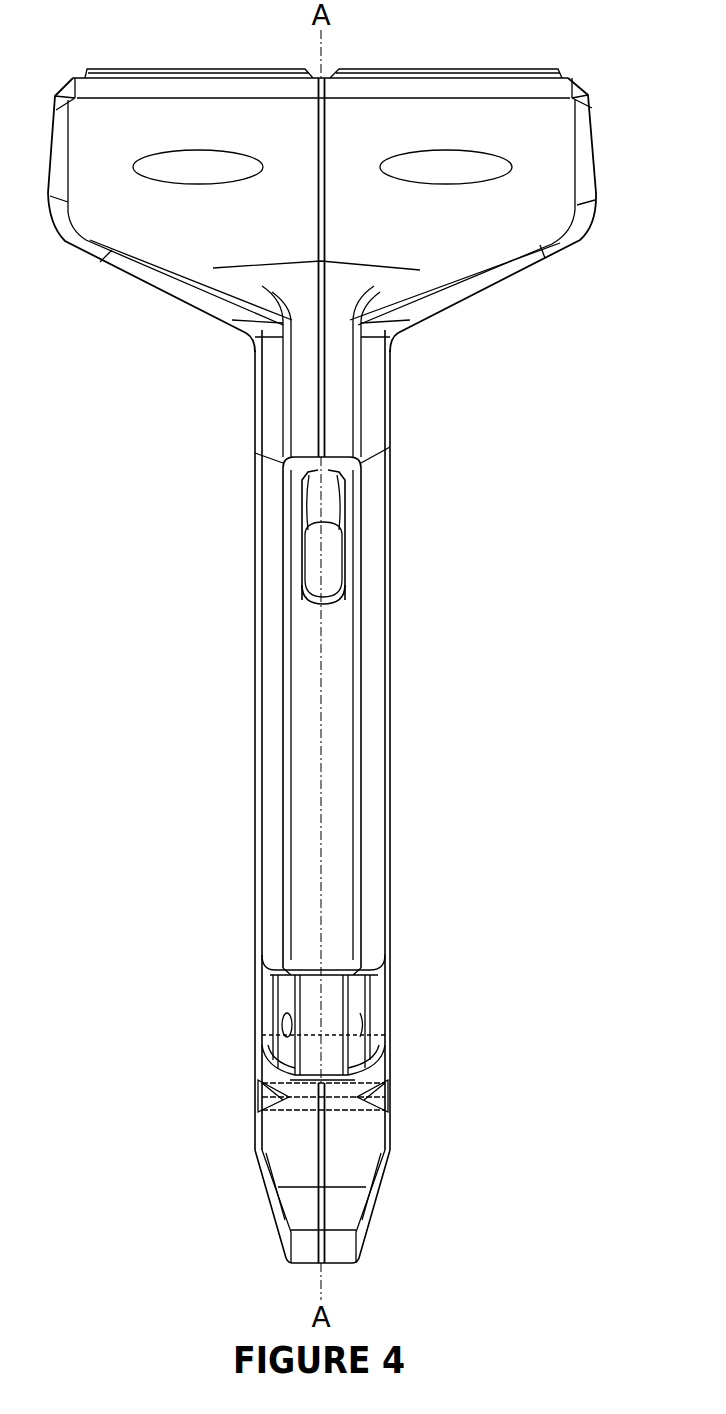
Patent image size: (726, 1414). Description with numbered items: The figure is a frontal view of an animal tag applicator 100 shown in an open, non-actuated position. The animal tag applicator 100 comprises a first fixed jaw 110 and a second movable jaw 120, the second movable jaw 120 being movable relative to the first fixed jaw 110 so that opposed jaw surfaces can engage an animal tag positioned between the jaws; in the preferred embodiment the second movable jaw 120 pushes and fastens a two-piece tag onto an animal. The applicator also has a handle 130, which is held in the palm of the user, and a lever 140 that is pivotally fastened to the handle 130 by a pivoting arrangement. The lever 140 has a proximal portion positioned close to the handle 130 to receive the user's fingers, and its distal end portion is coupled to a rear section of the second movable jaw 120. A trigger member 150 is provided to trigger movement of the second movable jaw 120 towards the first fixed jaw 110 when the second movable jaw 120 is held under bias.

The animal tag applicator 100 is at (228, 775).
The first fixed jaw 110 is at (242, 242).
The second movable jaw 120 is at (252, 67).
The handle 130 is at (262, 988).
The lever 140 is at (338, 733).
The trigger member 150 is at (335, 537).